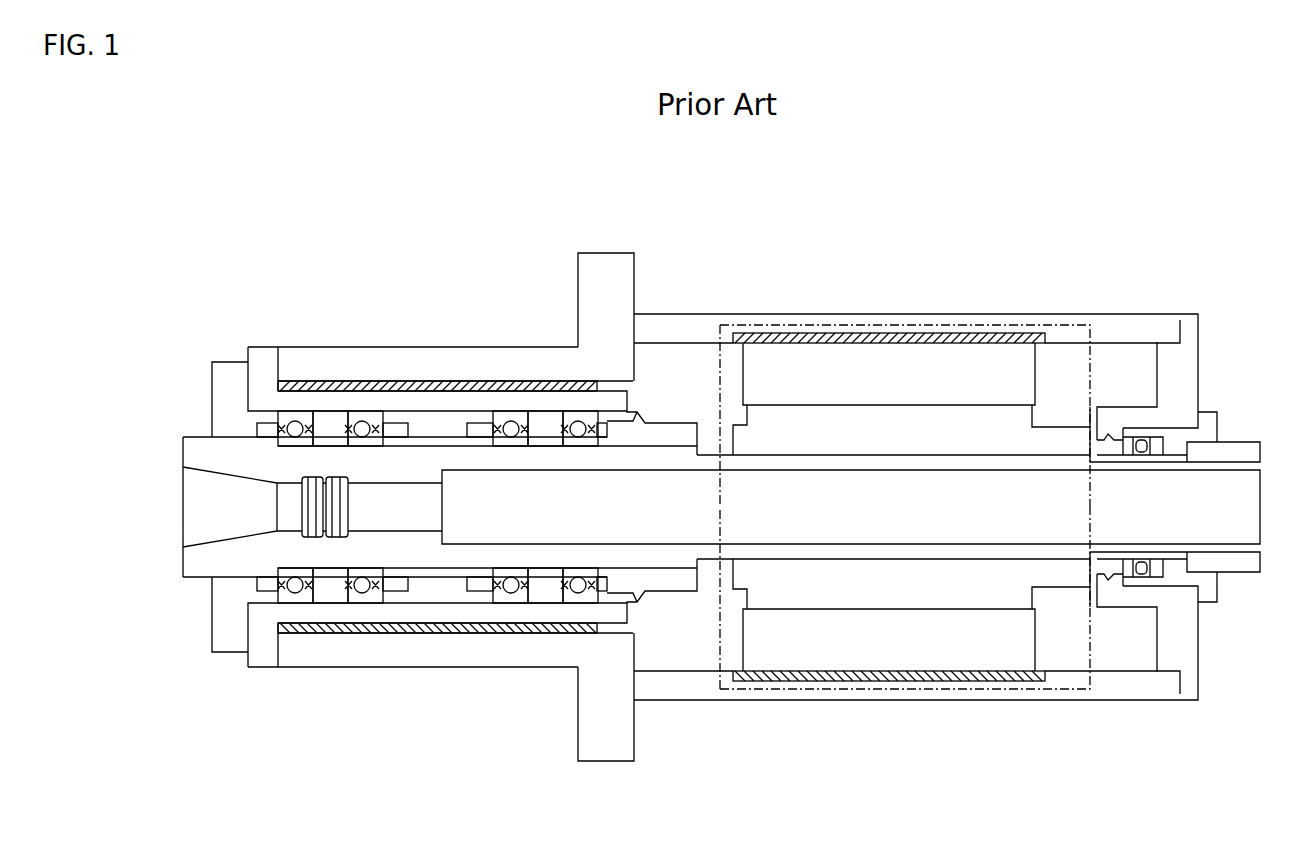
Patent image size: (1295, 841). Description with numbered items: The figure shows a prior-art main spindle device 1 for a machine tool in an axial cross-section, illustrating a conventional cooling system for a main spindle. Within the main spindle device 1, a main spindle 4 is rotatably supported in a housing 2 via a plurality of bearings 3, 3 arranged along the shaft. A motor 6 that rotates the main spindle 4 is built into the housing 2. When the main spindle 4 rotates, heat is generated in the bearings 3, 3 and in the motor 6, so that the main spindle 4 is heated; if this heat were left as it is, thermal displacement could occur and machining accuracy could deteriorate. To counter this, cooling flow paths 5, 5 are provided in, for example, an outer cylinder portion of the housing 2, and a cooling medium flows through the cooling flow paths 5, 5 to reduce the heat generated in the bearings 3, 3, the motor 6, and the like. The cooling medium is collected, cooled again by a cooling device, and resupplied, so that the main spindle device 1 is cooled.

The main spindle device 1 is at (721, 460).
The housing 2 is at (660, 325).
The bearings 3 is at (300, 598).
The main spindle 4 is at (415, 465).
The cooling flow paths 5 is at (458, 385).
The motor 6 is at (958, 325).